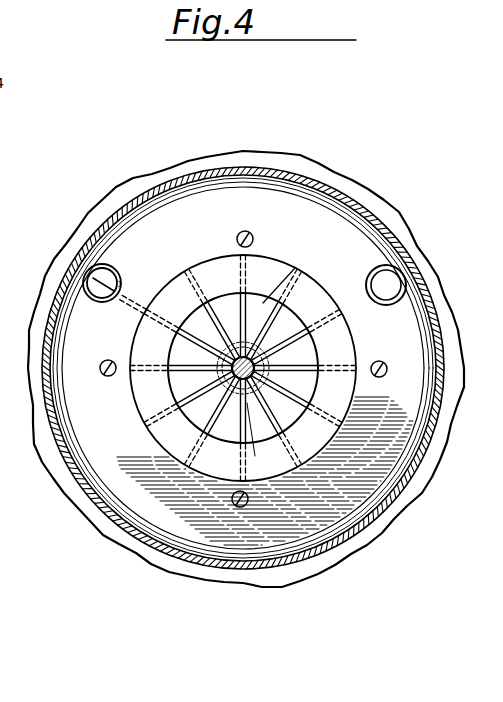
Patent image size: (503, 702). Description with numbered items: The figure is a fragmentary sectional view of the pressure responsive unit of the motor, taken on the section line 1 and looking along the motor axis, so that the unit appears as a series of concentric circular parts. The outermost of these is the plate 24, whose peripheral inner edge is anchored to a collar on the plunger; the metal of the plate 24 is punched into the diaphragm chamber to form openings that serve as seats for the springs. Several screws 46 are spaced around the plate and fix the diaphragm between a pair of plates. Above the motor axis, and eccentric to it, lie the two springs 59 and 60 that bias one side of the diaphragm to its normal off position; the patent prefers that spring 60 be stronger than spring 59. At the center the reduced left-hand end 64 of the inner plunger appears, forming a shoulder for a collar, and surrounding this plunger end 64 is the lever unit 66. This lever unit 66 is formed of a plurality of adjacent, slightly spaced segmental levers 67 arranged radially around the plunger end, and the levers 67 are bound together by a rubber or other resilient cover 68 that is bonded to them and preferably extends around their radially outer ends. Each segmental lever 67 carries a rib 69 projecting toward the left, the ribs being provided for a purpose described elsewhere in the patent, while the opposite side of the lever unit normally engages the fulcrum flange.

The section line 1 is at (48, 242).
The plate 24 is at (218, 171).
The screws 46 is at (382, 366).
The spring 59 is at (117, 270).
The spring 60 is at (376, 279).
The reduced left-hand end 64 is at (224, 372).
The lever unit 66 is at (214, 259).
The segmental levers 67 is at (285, 317).
The resilient cover 68 is at (338, 334).
The rib 69 is at (266, 373).